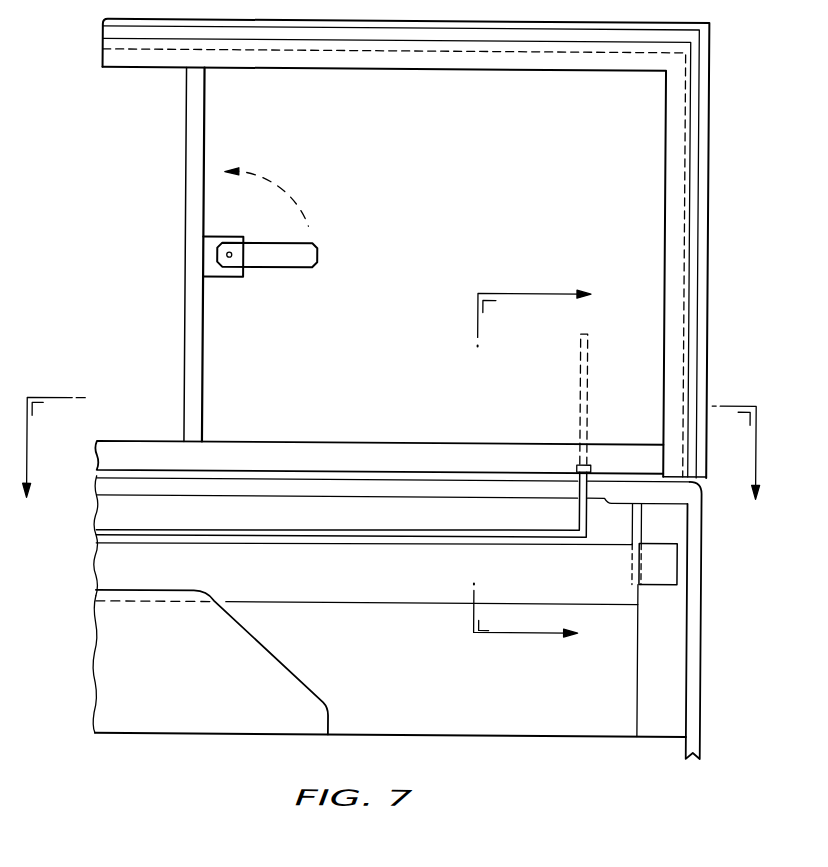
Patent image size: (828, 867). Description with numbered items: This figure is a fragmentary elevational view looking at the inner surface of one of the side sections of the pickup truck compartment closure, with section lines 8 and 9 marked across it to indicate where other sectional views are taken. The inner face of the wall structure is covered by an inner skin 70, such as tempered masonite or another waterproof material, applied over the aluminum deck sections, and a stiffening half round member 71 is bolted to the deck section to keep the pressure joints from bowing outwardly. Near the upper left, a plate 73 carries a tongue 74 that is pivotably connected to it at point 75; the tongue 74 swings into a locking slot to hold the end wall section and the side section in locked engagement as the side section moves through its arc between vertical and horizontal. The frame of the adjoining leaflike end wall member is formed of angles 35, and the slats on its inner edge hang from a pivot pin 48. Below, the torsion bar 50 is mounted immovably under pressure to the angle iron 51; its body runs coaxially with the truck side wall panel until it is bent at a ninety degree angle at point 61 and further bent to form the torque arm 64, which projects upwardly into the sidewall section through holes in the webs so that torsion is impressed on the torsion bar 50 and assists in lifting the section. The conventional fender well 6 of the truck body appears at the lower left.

The fender well 6 is at (216, 683).
The section line 8 is at (540, 460).
The section line 9 is at (387, 466).
The angles 35 is at (708, 149).
The pivot pin 48 is at (655, 670).
The torsion bar 50 is at (535, 544).
The angle iron 51 is at (632, 556).
The ninety-degree bend point 61 is at (585, 531).
The torque arm 64 is at (581, 388).
The inner skin 70 is at (438, 241).
The stiffening half round member 71 is at (203, 313).
The plate 73 is at (213, 238).
The tongue 74 is at (286, 268).
The pivot point 75 is at (232, 253).